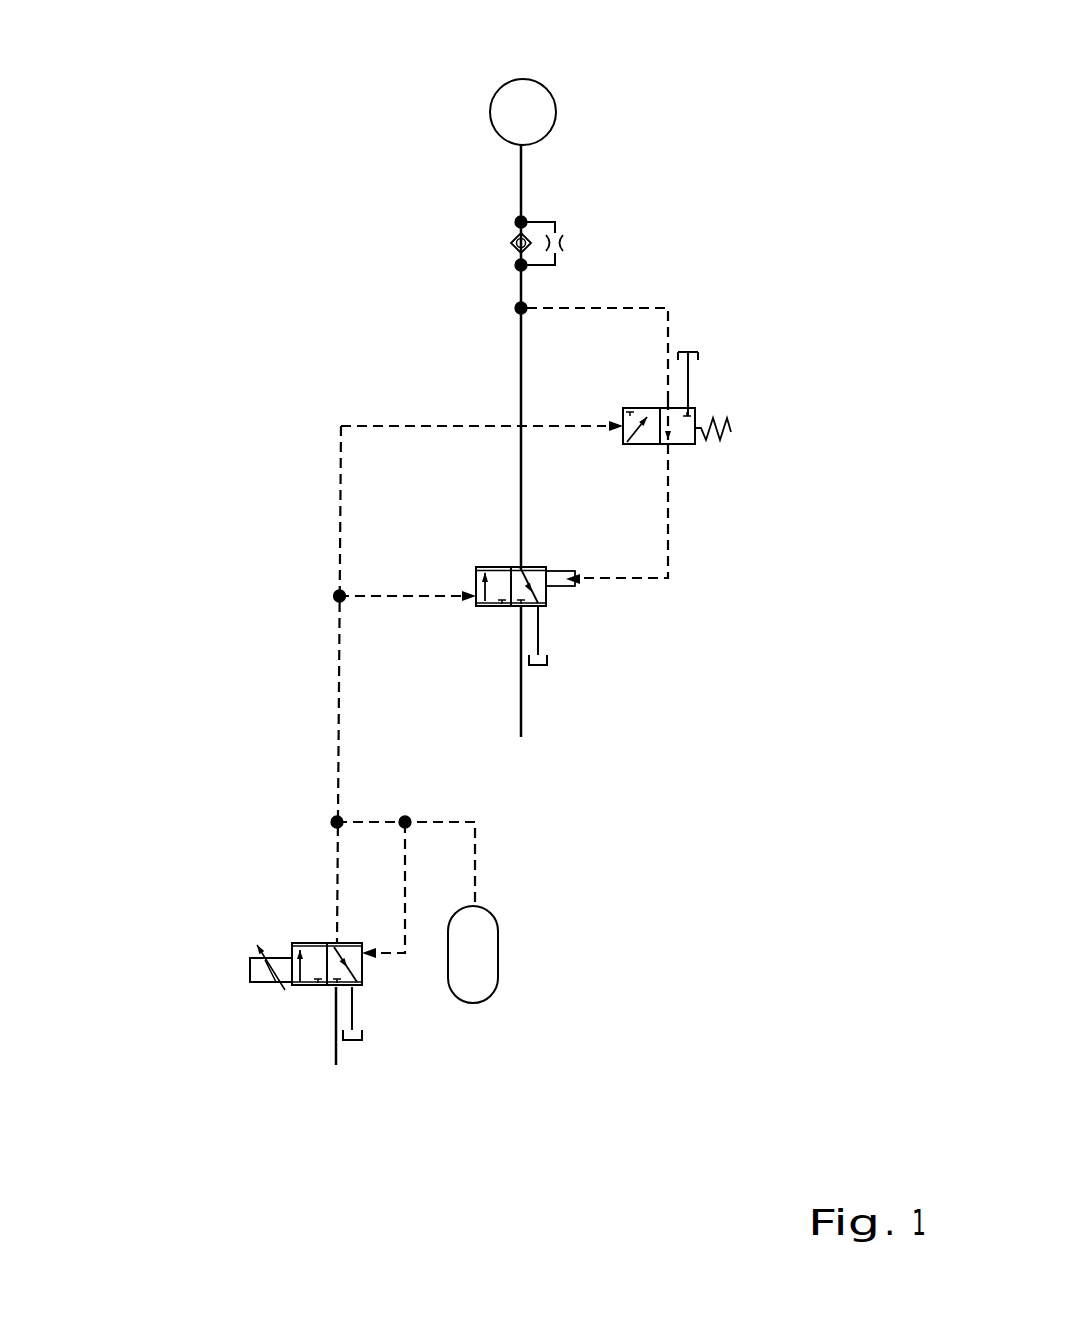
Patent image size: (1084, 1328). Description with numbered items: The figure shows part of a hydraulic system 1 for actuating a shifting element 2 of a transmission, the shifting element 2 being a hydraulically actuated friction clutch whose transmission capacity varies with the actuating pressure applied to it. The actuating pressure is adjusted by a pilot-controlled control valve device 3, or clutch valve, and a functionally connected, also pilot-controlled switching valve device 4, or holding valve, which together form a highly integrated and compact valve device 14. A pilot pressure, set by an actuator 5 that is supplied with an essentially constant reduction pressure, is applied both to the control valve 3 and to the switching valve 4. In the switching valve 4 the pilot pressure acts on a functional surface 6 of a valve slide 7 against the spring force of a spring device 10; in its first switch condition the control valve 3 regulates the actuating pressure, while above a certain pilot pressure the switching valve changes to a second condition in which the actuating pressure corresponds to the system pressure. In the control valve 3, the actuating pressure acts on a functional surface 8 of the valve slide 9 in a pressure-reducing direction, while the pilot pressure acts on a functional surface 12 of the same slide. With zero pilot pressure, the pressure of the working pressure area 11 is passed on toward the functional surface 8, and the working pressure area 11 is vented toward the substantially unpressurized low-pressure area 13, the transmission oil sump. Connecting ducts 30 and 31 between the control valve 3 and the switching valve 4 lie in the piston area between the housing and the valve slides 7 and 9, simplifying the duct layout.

The hydraulic system 1 is at (225, 100).
The shifting element 2 is at (490, 105).
The control valve device 3 is at (620, 665).
The switching valve device 4 is at (763, 390).
The actuator 5 is at (275, 1026).
The functional surface 6 is at (623, 441).
The valve slide 7 is at (648, 444).
The functional surface 8 is at (546, 603).
The valve slide 9 is at (517, 724).
The spring device 10 is at (724, 422).
The working pressure area 11 is at (458, 372).
The functional surface 12 is at (476, 577).
The low-pressure area 13 is at (688, 352).
The valve device 14 is at (768, 542).
The connecting duct 30 is at (675, 313).
The connecting duct 31 is at (668, 518).